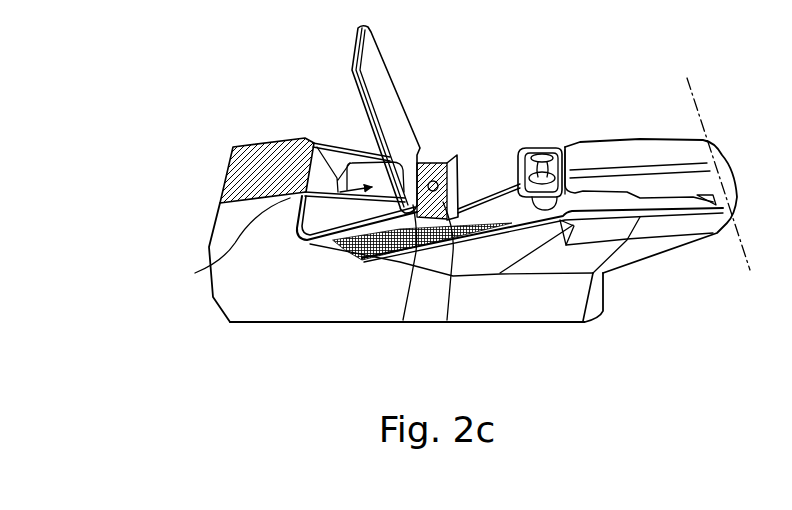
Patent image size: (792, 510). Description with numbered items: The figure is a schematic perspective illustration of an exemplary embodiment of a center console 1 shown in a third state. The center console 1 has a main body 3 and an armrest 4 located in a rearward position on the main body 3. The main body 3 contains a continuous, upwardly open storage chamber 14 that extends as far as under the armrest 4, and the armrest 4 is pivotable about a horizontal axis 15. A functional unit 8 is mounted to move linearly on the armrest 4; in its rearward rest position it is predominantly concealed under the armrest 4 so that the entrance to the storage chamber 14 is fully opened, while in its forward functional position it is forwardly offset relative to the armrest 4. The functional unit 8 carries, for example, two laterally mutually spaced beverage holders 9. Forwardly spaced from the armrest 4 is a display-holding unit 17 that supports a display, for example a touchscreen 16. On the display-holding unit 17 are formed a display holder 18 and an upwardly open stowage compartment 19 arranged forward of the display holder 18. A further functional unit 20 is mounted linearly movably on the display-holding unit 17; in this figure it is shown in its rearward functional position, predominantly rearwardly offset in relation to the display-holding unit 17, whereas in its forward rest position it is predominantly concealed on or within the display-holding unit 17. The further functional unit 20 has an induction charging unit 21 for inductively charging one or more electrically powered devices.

The center console 1 is at (335, 326).
The main body 3 is at (292, 308).
The armrest 4 is at (640, 153).
The functional unit 8 is at (560, 137).
The beverage holders 9 is at (545, 154).
The storage chamber 14 is at (514, 203).
The horizontal axis 15 is at (692, 88).
The touchscreen 16 is at (377, 80).
The display-holding unit 17 is at (353, 143).
The display holder 18 is at (403, 320).
The stowage compartment 19 is at (195, 273).
The further functional unit 20 is at (433, 158).
The induction charging unit 21 is at (447, 320).